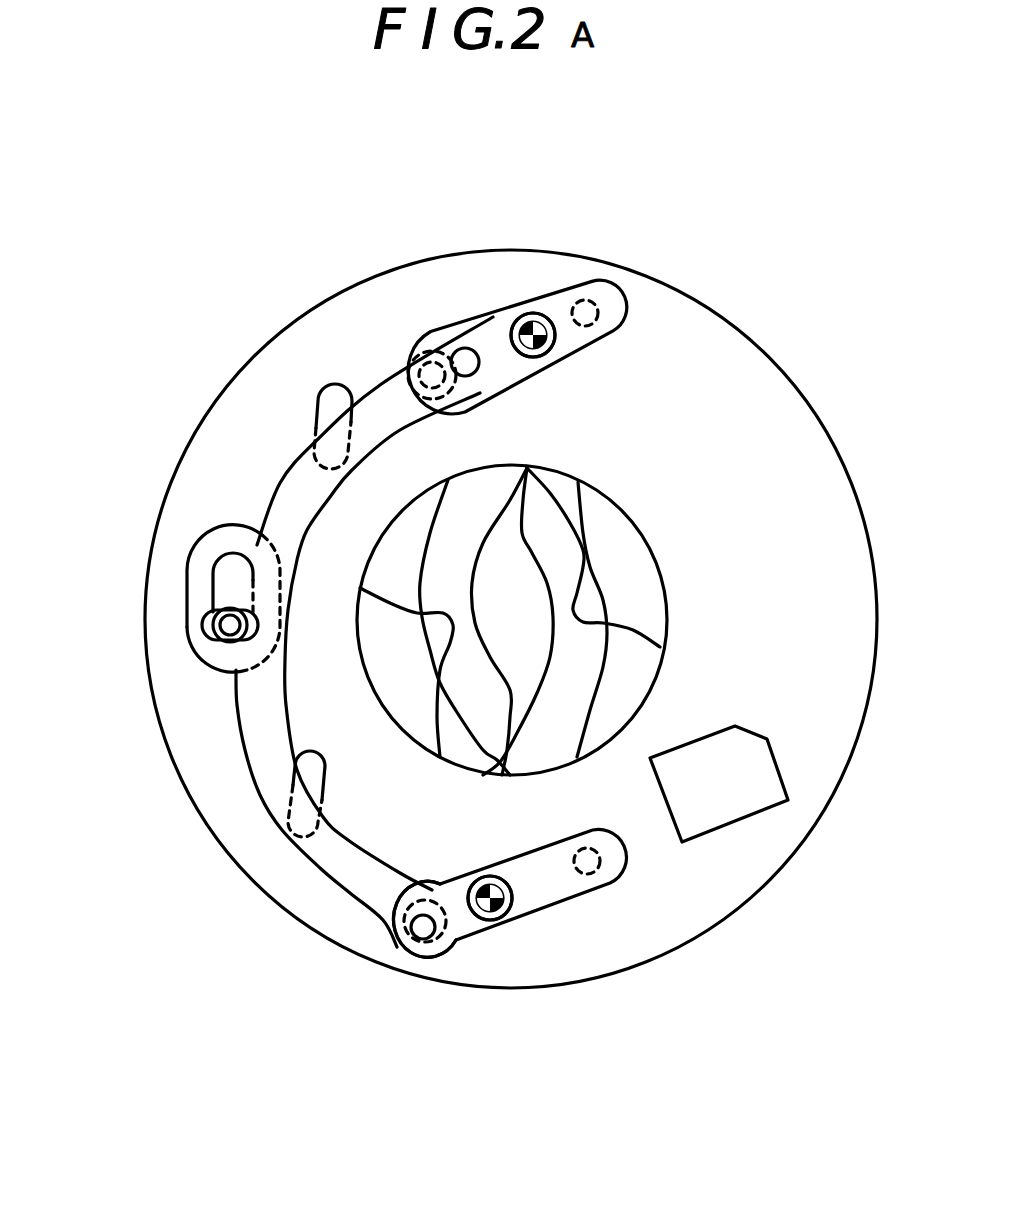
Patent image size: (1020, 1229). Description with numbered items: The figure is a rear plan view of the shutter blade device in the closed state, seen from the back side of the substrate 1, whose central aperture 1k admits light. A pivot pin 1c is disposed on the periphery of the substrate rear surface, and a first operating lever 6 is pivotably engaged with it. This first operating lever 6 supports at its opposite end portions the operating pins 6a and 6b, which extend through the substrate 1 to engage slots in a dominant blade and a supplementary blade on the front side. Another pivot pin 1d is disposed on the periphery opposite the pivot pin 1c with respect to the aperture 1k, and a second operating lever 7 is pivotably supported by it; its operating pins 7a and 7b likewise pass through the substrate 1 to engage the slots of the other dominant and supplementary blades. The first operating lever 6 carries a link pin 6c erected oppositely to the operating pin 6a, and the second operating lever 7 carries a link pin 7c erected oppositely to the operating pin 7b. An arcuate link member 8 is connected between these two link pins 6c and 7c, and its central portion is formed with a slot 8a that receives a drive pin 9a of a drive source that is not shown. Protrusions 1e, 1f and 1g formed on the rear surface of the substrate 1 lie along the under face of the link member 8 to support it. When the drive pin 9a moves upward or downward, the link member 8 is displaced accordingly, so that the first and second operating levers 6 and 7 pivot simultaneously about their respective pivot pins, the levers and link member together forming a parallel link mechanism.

The substrate 1 is at (735, 348).
The pivot pin 1c is at (553, 318).
The pivot pin 1d is at (508, 914).
The protrusion 1e is at (330, 384).
The protrusion 1f is at (297, 836).
The protrusion 1g is at (192, 571).
The aperture 1k is at (643, 662).
The first operating lever 6 is at (537, 300).
The operating pin 6a is at (431, 362).
The operating pin 6b is at (599, 312).
The link pin 6c is at (473, 350).
The second operating lever 7 is at (560, 896).
The operating pin 7a is at (598, 864).
The operating pin 7b is at (460, 942).
The link pin 7c is at (402, 952).
The link member 8 is at (253, 753).
The slot 8a is at (200, 625).
The drive pin 9a is at (222, 560).